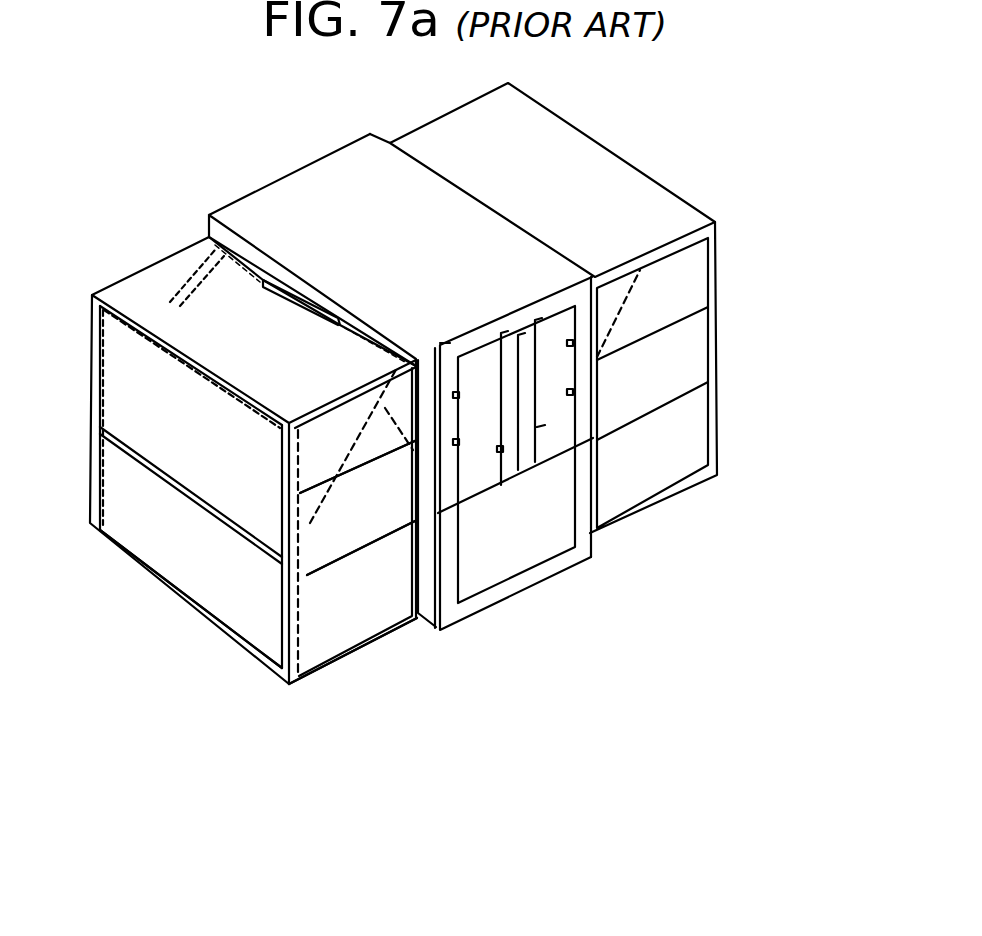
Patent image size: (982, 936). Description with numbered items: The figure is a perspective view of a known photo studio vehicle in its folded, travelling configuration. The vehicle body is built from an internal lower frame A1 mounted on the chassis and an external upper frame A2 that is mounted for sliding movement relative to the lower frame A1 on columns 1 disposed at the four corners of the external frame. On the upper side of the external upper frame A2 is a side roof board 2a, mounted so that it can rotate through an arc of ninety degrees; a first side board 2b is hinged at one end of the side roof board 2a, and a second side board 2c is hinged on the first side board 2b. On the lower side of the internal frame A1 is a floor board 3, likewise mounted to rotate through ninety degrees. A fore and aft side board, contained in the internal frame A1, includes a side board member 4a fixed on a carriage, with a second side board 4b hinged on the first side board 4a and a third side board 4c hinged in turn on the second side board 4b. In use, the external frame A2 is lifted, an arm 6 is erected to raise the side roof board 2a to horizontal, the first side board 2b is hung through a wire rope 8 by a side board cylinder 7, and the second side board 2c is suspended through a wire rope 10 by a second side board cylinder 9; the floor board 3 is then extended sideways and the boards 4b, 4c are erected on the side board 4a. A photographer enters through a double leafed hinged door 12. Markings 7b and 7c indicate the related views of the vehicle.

The column 1 is at (425, 617).
The side roof board 2a is at (125, 297).
The first side board 2b is at (173, 458).
The second side board 2c is at (188, 562).
The floor board 3 is at (357, 653).
The side board member 4a is at (353, 522).
The second side board 4b is at (358, 507).
The third side board 4c is at (353, 426).
The arm 6 is at (393, 440).
The side board cylinder 7 is at (277, 280).
The section line 7b is at (562, 518).
The section line 7c is at (220, 718).
The wire rope 8 is at (168, 268).
The second side board cylinder 9 is at (232, 390).
The wire rope 10 is at (300, 648).
The double leafed hinged door 12 is at (553, 347).
The internal lower frame A1 is at (557, 565).
The external upper frame A2 is at (587, 385).